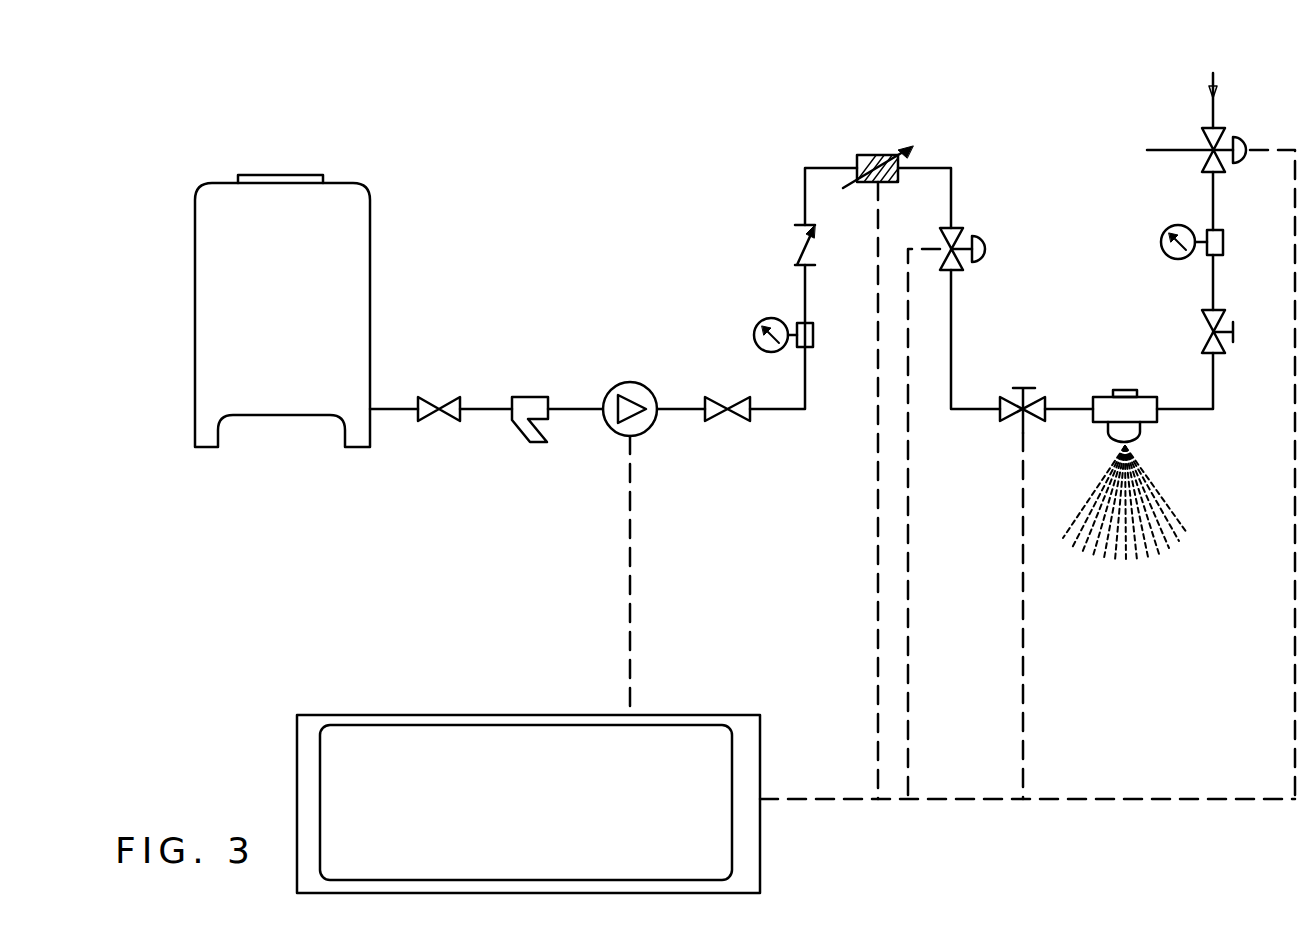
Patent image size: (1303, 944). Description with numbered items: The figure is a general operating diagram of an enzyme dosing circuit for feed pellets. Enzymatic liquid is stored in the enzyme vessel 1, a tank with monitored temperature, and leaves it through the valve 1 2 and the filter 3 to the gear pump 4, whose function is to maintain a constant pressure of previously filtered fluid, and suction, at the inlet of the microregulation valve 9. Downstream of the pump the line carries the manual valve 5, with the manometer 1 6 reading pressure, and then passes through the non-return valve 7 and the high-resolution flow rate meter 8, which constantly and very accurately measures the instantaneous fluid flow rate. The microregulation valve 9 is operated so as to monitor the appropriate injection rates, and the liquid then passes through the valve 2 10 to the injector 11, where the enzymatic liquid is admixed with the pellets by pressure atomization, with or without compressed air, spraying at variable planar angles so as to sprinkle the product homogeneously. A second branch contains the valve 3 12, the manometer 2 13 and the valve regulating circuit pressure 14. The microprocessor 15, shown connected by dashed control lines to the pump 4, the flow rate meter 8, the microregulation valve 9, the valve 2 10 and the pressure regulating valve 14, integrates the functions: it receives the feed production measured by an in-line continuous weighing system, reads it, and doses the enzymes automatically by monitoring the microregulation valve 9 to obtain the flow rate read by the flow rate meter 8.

The enzyme vessel 1 is at (345, 197).
The valve 1 2 is at (440, 410).
The filter 3 is at (532, 399).
The gear pump 4 is at (624, 383).
The manual valve 5 is at (732, 408).
The manometer 1 6 is at (798, 322).
The non-return valve 7 is at (797, 247).
The flow rate meter 8 is at (870, 160).
The microregulation valve 9 is at (975, 238).
The valve 2 10 is at (1020, 392).
The injector 11 is at (1120, 390).
The valve 3 12 is at (1210, 332).
The manometer 2 13 is at (1210, 232).
The valve regulating circuit pressure 14 is at (1218, 85).
The microprocessor 15 is at (386, 738).